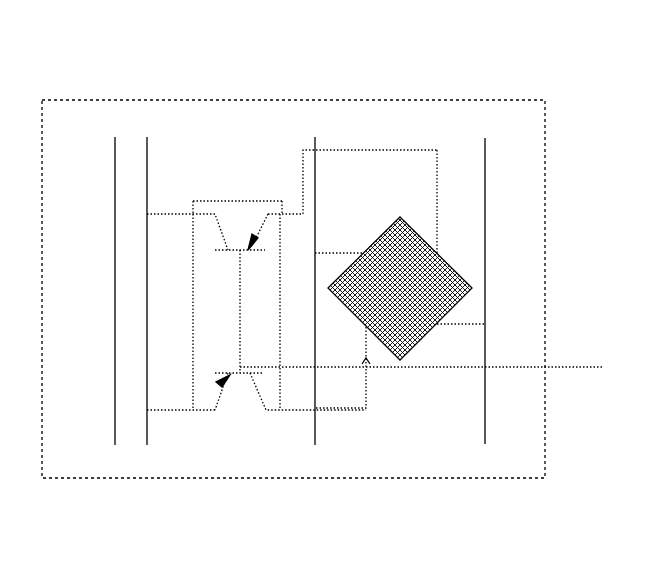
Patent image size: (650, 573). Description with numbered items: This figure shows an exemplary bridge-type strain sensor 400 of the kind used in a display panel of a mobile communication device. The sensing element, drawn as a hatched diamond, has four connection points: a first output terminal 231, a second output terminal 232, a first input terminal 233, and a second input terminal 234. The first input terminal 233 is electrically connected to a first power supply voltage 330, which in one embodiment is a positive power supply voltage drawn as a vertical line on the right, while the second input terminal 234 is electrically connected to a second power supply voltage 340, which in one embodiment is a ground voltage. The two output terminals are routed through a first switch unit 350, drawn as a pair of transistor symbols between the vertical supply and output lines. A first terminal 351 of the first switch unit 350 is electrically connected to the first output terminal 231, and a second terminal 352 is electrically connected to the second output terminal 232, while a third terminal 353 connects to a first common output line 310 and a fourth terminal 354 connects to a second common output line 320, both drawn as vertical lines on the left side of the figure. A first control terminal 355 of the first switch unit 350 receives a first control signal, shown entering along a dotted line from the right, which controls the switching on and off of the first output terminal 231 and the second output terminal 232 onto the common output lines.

The bridge-type strain sensor 400 is at (52, 34).
The first common output line 310 is at (147, 152).
The second common output line 320 is at (115, 222).
The first power supply voltage 330 is at (485, 221).
The second power supply voltage 340 is at (316, 428).
The first switch unit 350 is at (235, 430).
The first terminal 351 is at (282, 213).
The second terminal 352 is at (281, 412).
The third terminal 353 is at (191, 213).
The fourth terminal 354 is at (191, 412).
The first control terminal 355 is at (284, 366).
The first output terminal 231 is at (437, 253).
The second output terminal 232 is at (370, 332).
The first input terminal 233 is at (438, 326).
The second input terminal 234 is at (364, 253).